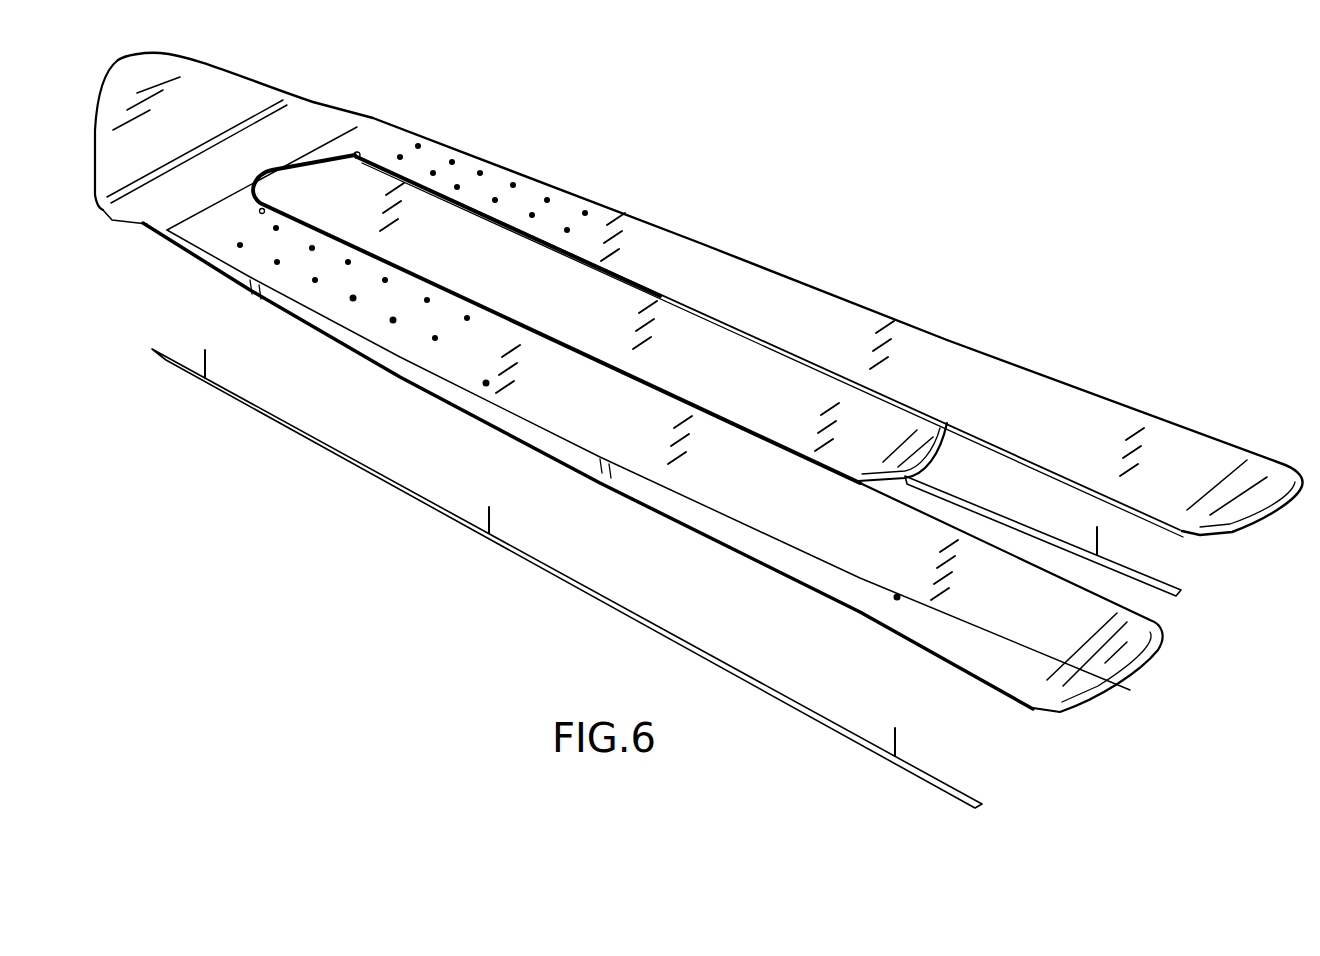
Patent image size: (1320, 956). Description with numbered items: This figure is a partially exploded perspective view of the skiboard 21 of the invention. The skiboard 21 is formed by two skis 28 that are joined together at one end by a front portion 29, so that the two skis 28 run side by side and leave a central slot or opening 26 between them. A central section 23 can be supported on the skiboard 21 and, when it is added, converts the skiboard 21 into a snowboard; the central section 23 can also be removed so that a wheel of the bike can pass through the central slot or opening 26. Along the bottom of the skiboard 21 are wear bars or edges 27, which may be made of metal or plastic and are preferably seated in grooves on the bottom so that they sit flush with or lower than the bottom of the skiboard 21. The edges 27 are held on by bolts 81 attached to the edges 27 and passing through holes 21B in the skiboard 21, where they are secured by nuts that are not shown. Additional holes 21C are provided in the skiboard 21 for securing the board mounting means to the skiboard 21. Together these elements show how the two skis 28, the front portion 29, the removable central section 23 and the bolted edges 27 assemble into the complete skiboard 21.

The skiboard 21 is at (666, 152).
The holes 21B is at (486, 383).
The holes 21C is at (393, 320).
The central section 23 is at (443, 237).
The central slot or opening 26 is at (1057, 517).
The wear bars or edges 27 is at (420, 494).
The skis 28 is at (793, 287).
The front portion 29 is at (213, 90).
The bolts 81 is at (205, 352).